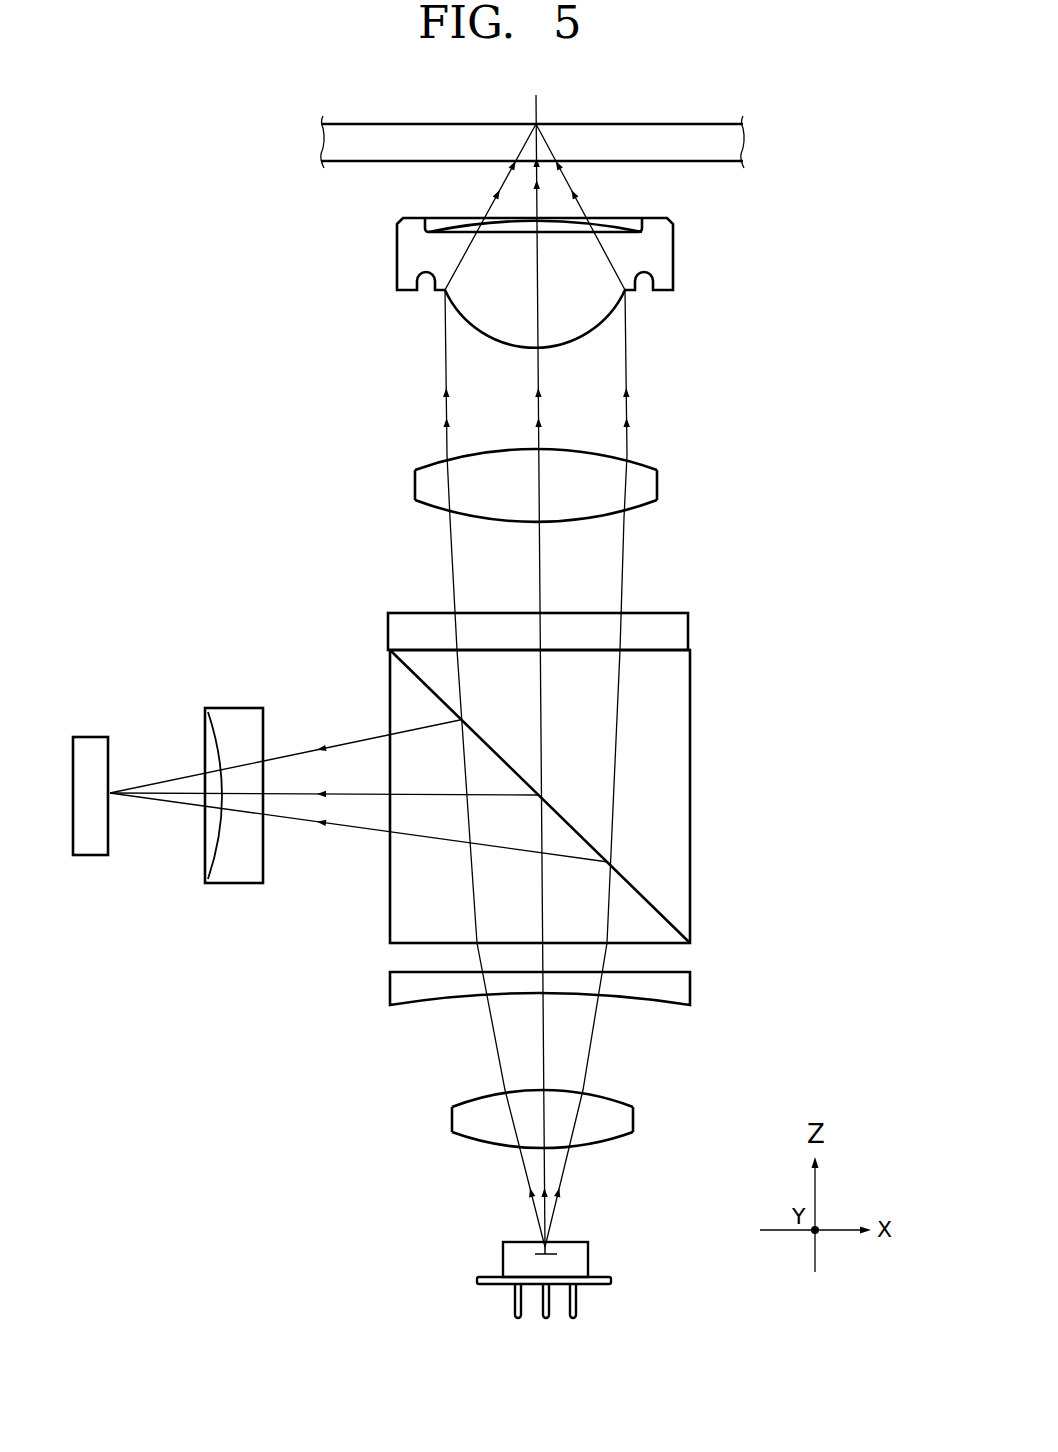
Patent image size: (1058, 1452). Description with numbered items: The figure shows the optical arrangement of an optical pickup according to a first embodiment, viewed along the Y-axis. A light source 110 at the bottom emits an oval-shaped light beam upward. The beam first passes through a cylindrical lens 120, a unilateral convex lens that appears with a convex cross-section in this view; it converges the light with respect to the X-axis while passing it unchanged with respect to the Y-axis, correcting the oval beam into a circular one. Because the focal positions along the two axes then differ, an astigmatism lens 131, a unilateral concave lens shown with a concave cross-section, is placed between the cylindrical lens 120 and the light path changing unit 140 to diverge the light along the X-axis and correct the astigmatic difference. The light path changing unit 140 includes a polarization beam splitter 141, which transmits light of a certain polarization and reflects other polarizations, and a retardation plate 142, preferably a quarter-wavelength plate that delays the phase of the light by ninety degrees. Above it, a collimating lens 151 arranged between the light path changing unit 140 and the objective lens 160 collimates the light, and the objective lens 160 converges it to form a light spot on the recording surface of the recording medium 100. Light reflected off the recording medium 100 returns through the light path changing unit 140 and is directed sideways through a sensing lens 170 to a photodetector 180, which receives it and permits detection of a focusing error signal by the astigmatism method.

The recording medium 100 is at (733, 143).
The light source 110 is at (590, 1258).
The cylindrical lens 120 is at (618, 1120).
The astigmatism lens 131 is at (680, 995).
The light path changing unit 140 is at (631, 778).
The polarization beam splitter 141 is at (683, 772).
The retardation plate 142 is at (682, 625).
The collimating lens 151 is at (662, 482).
The objective lens 160 is at (668, 251).
The sensing lens 170 is at (233, 883).
The photodetector 180 is at (92, 855).